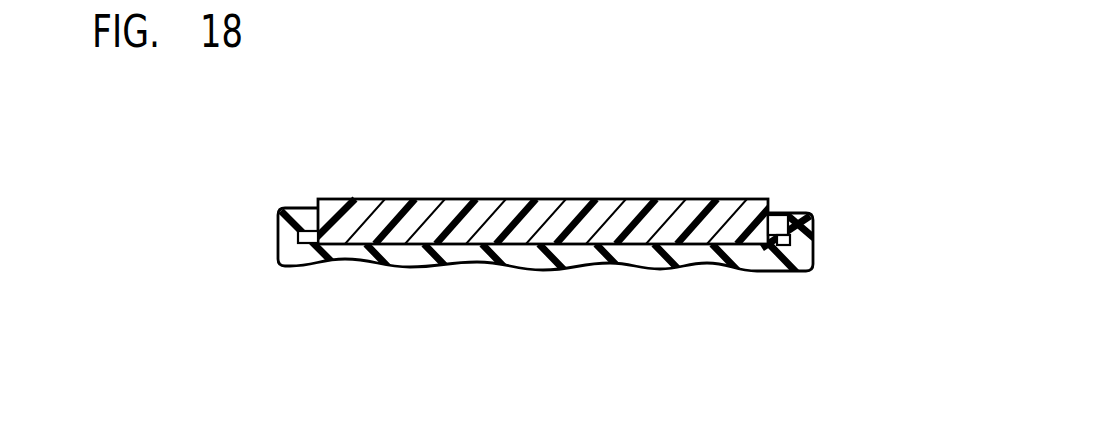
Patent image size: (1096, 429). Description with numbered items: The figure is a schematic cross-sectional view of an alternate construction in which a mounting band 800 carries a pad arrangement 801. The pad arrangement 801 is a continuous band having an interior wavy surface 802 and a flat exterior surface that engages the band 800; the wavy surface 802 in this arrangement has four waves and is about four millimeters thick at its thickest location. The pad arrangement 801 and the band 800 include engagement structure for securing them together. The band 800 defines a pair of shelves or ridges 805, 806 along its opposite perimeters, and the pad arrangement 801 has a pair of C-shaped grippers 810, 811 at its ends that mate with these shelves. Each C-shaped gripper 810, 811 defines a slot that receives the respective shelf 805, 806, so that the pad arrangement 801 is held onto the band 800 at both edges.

The mounting band 800 is at (620, 200).
The pad arrangement 801 is at (658, 270).
The interior wavy surface 802 is at (438, 270).
The shelf 805 is at (309, 228).
The shelf 806 is at (797, 215).
The C-shaped gripper 810 is at (277, 233).
The C-shaped gripper 811 is at (812, 247).